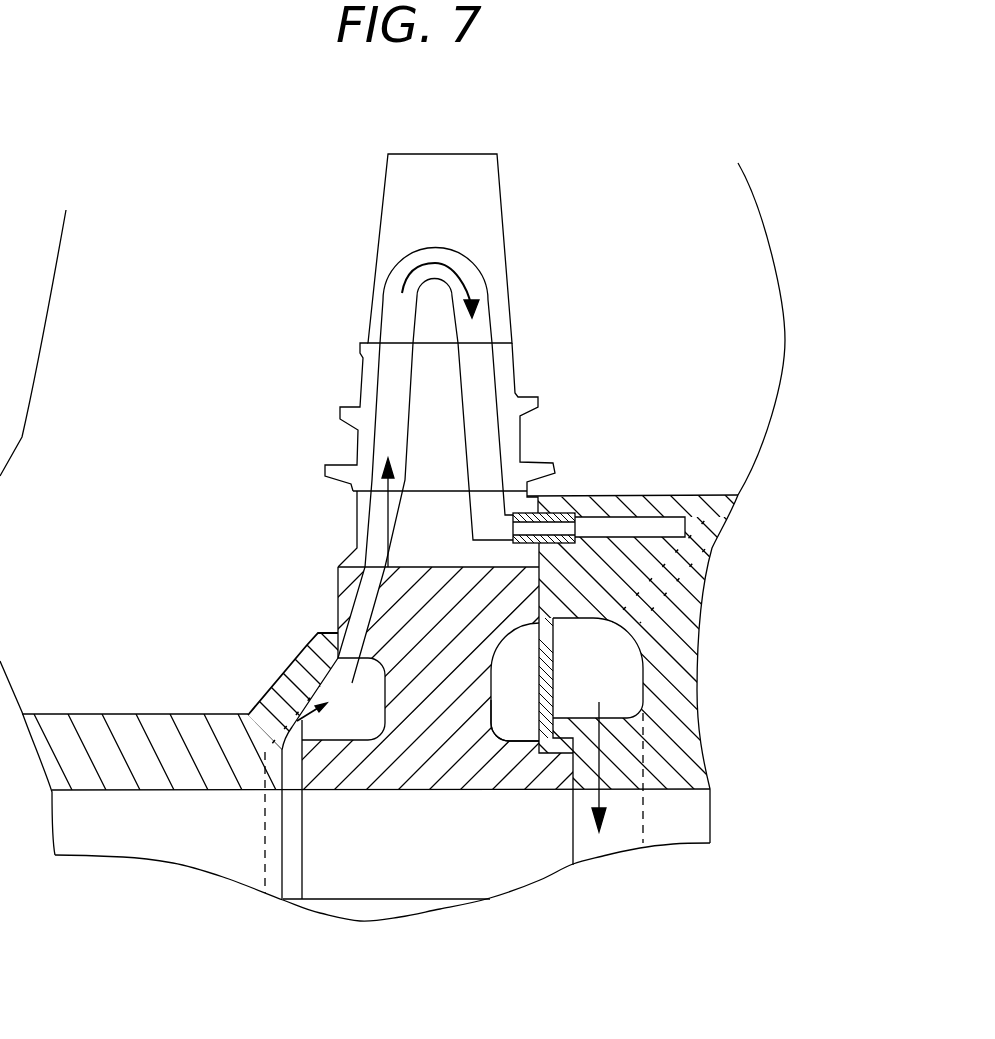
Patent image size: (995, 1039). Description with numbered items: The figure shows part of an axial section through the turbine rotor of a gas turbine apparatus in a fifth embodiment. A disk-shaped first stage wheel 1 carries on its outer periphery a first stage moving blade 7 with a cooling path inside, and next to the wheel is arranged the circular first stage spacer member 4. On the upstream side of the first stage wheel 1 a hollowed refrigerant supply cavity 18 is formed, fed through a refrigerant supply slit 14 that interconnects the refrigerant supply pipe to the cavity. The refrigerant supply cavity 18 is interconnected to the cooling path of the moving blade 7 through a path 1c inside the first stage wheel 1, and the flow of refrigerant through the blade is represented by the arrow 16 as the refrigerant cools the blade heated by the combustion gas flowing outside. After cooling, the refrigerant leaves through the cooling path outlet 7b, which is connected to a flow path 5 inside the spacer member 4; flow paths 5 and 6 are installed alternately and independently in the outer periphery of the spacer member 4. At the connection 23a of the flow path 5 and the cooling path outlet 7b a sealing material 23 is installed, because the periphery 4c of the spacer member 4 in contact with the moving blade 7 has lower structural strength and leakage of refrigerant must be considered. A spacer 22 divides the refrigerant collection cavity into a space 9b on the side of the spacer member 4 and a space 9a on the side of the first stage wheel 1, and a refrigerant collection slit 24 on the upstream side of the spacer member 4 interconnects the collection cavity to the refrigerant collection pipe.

The first stage moving blade 7 is at (400, 192).
The arrow representing refrigerant flow 16 is at (440, 265).
The periphery of the spacer member 4c is at (548, 507).
The sealing material 23 is at (570, 510).
The flow path 5 is at (640, 523).
The cooling path outlet 7b is at (495, 532).
The first stage wheel 1 is at (345, 580).
The path inside the first stage wheel 1c is at (358, 622).
The refrigerant supply cavity 18 is at (295, 670).
The refrigerant supply slit 14 is at (265, 752).
The flow path 6 is at (660, 580).
The connection 23a is at (540, 553).
The space on the spacer side of the refrigerant collection cavity 9b is at (630, 667).
The first stage spacer member 4 is at (668, 690).
The refrigerant collection slit 24 is at (630, 772).
The spacer 22 is at (490, 737).
The space on the wheel side of the refrigerant collection cavity 9a is at (517, 727).